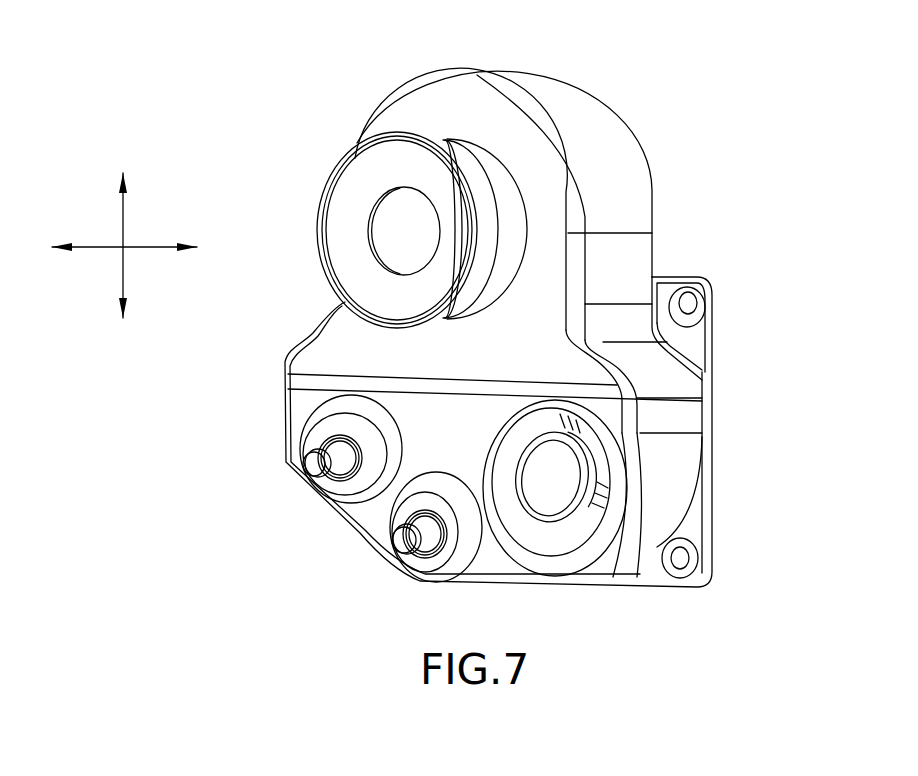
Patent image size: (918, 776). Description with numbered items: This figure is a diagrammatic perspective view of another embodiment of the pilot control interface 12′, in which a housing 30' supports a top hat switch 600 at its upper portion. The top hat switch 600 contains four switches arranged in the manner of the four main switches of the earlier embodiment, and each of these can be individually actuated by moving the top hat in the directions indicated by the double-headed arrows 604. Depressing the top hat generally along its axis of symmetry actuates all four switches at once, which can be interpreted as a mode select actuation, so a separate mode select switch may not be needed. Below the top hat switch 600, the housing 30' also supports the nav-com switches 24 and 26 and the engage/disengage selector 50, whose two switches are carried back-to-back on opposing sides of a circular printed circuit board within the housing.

The pilot control interface 12′ is at (655, 70).
The housing 30' is at (519, 327).
The top hat switch 600 is at (318, 233).
The double-headed arrows 604 is at (140, 247).
The nav-com switch 24 is at (305, 467).
The nav-com switch 26 is at (393, 540).
The engage/disengage selector 50 is at (558, 515).